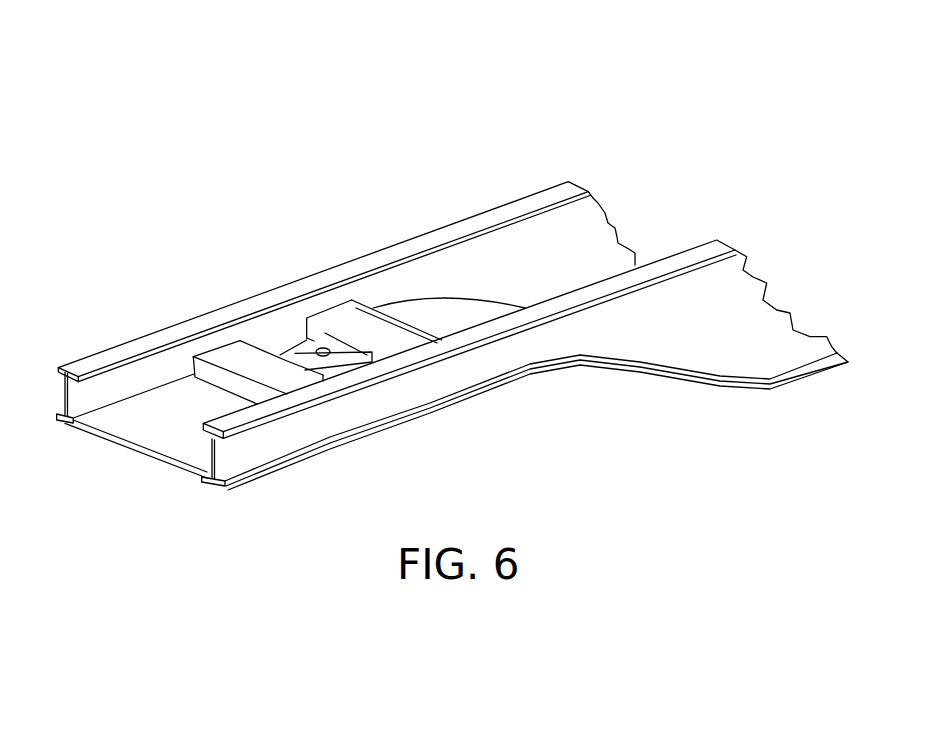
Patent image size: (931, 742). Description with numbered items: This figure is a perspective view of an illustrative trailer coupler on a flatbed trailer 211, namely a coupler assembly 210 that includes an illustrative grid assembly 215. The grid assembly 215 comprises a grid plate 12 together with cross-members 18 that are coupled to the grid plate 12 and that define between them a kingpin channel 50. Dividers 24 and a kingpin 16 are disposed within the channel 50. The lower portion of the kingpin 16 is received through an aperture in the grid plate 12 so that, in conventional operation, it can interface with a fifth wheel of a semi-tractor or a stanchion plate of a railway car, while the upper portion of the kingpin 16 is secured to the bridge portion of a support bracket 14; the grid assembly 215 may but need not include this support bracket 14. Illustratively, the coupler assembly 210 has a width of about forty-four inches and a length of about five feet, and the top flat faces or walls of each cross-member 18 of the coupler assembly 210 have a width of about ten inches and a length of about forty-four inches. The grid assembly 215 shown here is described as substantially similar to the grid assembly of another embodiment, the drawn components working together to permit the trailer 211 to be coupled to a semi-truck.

The coupler assembly 210 is at (125, 195).
The grid assembly 215 is at (267, 203).
The flatbed trailer 211 is at (342, 90).
The cross-members 18 is at (405, 337).
The support bracket 14 is at (280, 355).
The grid plate 12 is at (350, 357).
The dividers 24 is at (298, 345).
The kingpin 16 is at (323, 348).
The kingpin channel 50 is at (263, 336).